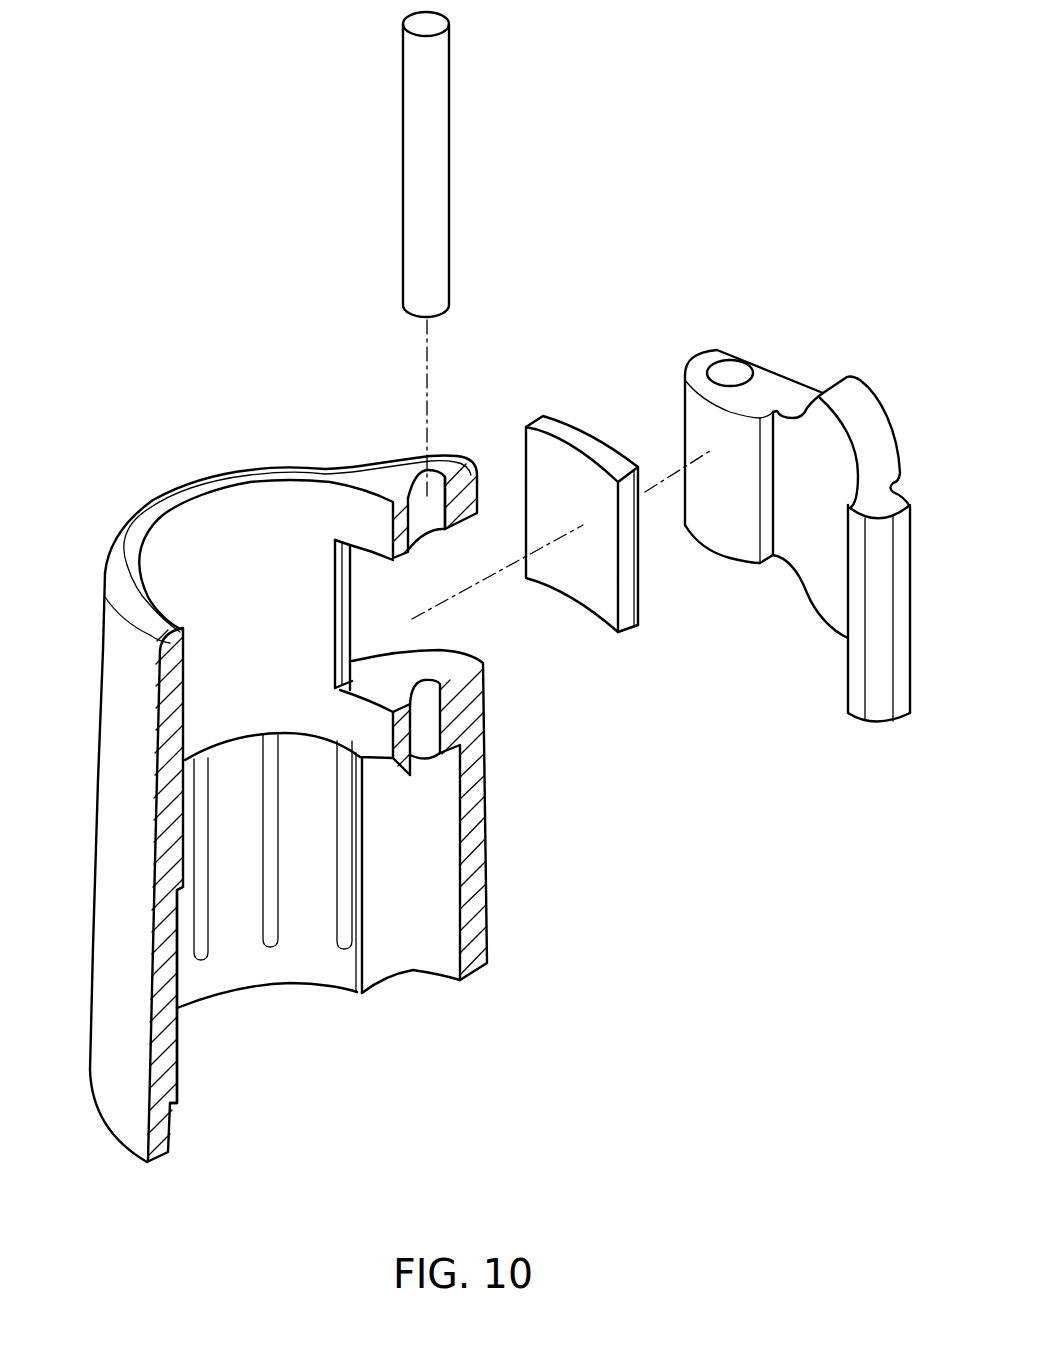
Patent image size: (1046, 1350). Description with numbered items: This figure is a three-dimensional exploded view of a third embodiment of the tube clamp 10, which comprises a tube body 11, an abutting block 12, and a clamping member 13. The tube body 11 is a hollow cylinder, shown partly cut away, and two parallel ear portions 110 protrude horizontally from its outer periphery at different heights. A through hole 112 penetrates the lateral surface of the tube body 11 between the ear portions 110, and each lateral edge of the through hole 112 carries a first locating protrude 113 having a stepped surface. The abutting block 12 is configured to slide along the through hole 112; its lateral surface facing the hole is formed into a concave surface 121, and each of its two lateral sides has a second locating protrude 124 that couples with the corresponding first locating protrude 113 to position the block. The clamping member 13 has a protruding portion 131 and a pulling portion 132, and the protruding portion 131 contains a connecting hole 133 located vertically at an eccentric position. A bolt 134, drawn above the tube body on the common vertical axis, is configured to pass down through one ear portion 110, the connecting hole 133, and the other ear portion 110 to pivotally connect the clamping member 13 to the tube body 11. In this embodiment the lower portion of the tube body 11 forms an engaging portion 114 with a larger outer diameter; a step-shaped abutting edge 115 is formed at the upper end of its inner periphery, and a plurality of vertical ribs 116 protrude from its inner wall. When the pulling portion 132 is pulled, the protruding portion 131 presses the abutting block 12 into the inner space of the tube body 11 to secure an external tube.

The tube clamp 10 is at (513, 830).
The tube body 11 is at (223, 483).
The ear portions 110 is at (438, 465).
The through hole 112 is at (363, 601).
The first locating protrude 113 is at (333, 650).
The engaging portion 114 is at (408, 907).
The abutting edge 115 is at (177, 888).
The vertical ribs 116 is at (347, 933).
The abutting block 12 is at (597, 453).
The concave surface 121 is at (577, 522).
The second locating protrude 124 is at (644, 470).
The clamping member 13 is at (861, 407).
The protruding portion 131 is at (727, 517).
The pulling portion 132 is at (870, 627).
The connecting hole 133 is at (731, 368).
The bolt 134 is at (418, 248).